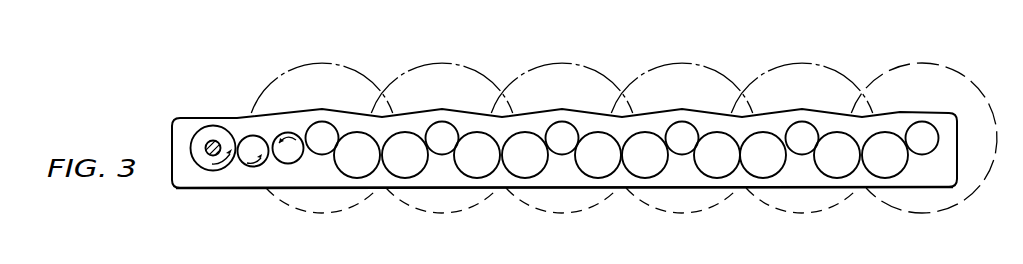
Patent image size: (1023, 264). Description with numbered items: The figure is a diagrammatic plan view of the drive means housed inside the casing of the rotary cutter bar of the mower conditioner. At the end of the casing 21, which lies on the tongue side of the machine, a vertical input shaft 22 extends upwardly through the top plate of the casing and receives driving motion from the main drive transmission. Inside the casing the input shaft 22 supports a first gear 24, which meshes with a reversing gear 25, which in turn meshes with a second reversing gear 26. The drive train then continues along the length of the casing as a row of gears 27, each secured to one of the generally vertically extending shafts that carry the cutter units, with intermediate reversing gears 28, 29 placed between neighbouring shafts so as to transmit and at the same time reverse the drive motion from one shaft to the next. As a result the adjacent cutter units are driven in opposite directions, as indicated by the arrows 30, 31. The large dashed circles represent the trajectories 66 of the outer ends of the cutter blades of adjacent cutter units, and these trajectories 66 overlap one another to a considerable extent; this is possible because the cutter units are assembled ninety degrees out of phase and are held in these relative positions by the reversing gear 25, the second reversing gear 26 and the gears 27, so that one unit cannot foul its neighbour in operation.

The end of the casing 21 is at (192, 119).
The input shaft 22 is at (208, 155).
The first gear 24 is at (213, 183).
The reversing gear 25 is at (252, 168).
The second reversing gear 26 is at (280, 164).
The gears 27 is at (320, 155).
The intermediate reversing gear 28 is at (354, 178).
The intermediate reversing gear 29 is at (402, 178).
The arrow 30 is at (379, 78).
The arrow 31 is at (398, 64).
The trajectories 66 is at (272, 83).